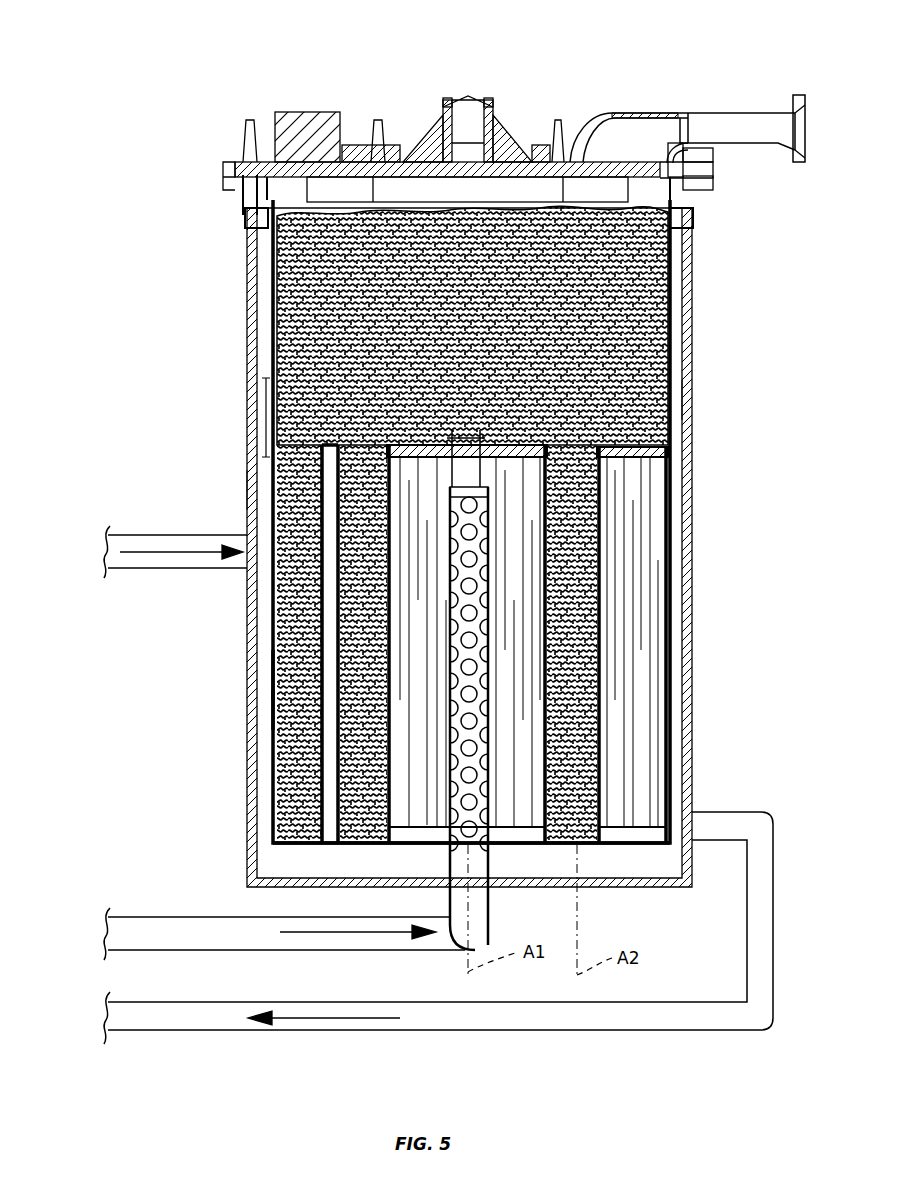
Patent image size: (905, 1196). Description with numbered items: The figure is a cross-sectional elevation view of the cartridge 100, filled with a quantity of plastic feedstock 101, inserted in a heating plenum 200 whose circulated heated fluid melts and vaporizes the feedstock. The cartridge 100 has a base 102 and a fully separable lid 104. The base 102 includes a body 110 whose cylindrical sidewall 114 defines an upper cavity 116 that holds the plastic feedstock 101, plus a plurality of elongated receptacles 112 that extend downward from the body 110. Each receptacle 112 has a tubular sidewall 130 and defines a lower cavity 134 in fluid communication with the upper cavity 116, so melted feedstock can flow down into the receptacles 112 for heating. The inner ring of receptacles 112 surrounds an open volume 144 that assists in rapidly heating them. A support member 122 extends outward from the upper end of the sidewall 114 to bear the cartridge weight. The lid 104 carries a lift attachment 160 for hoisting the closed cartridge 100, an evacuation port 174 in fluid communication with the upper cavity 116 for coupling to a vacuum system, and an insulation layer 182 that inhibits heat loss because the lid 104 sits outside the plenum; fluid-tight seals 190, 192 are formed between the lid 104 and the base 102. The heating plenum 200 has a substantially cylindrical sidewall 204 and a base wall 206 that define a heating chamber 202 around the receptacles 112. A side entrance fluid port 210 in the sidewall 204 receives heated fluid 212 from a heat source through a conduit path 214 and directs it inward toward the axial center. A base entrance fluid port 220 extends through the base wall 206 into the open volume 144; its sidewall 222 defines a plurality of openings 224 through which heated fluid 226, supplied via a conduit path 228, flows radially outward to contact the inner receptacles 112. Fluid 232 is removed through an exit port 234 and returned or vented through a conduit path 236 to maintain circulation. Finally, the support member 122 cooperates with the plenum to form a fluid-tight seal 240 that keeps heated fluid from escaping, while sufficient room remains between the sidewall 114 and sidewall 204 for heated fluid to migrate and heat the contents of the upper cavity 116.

The cartridge 100 is at (134, 127).
The plastic feedstock 101 is at (615, 326).
The base 102 is at (679, 402).
The lid 104 is at (533, 100).
The body 110 is at (269, 400).
The receptacles 112 is at (267, 672).
The sidewall 114 is at (275, 441).
The upper cavity 116 is at (326, 348).
The support member 122 is at (249, 223).
The sidewall 130 is at (275, 712).
The lower cavities 134 is at (291, 648).
The open volume 144 is at (427, 818).
The lift attachment 160 is at (440, 98).
The evacuation port 174 is at (634, 108).
The insulation layer 182 is at (365, 146).
The fluid-tight seal 190 is at (266, 160).
The fluid-tight seal 192 is at (246, 150).
The heating plenum 200 is at (94, 369).
The heating chamber 202 is at (674, 651).
The sidewall 204 is at (246, 490).
The base wall 206 is at (305, 893).
The side entrance fluid port 210 is at (244, 569).
The heated fluid 212 is at (181, 540).
The conduit path 214 is at (109, 534).
The base entrance fluid port 220 is at (510, 527).
The sidewall 222 is at (491, 578).
The openings 224 is at (476, 607).
The heated fluid 226 is at (310, 932).
The conduit path 228 is at (124, 917).
The fluid 232 is at (345, 1030).
The exit port 234 is at (700, 818).
The conduit path 236 is at (185, 1031).
The fluid-tight seal 240 is at (696, 218).